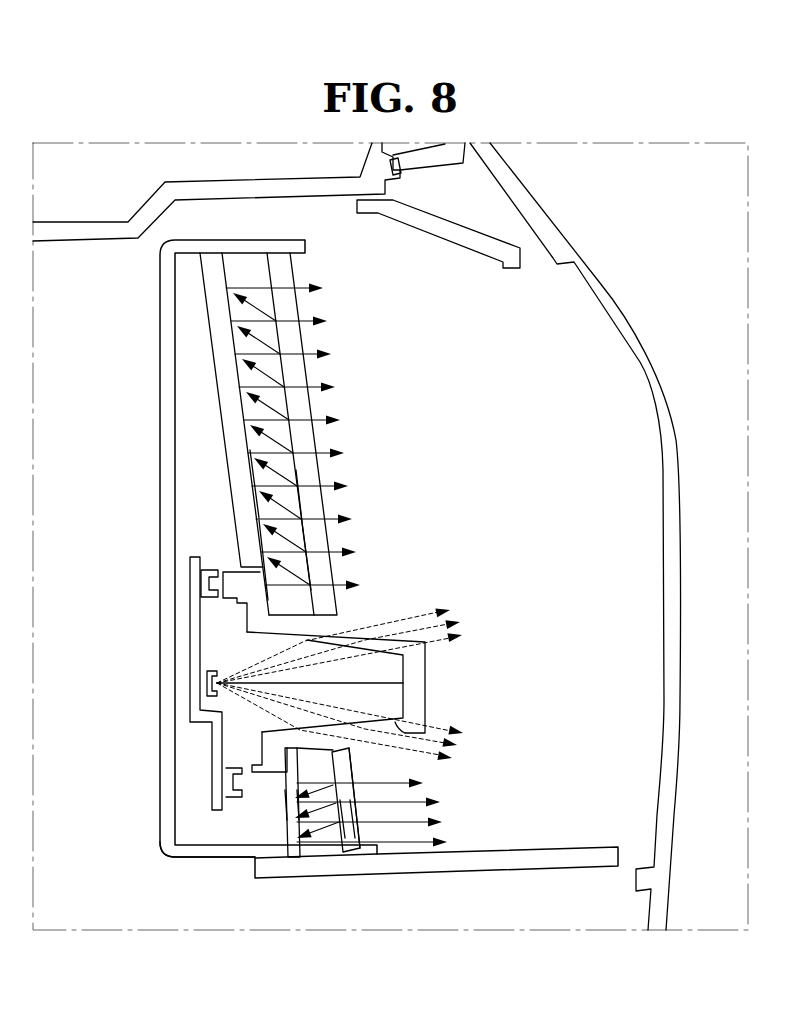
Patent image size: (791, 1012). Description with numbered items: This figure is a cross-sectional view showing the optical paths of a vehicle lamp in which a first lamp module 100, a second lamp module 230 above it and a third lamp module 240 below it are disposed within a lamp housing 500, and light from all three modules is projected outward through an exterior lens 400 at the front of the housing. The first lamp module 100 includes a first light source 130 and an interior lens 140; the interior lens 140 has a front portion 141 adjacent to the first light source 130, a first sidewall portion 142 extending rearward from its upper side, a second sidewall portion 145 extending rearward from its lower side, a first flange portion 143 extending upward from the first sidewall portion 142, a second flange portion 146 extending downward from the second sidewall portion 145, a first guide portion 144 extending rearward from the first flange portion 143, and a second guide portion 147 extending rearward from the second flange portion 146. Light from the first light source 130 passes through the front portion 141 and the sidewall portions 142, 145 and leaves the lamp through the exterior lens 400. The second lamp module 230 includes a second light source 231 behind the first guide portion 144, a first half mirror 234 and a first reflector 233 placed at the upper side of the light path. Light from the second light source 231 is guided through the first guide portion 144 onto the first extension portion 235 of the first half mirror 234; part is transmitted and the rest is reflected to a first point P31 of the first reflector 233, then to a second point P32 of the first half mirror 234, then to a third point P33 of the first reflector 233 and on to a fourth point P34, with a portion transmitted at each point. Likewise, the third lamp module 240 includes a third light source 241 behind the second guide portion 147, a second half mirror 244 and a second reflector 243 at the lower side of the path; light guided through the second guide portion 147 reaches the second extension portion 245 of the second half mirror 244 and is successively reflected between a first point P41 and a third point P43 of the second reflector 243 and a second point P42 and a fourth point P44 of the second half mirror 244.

The first lamp module 100 is at (561, 652).
The first light source 130 is at (207, 684).
The interior lens 140 is at (353, 663).
The front portion 141 is at (417, 686).
The first sidewall portion 142 is at (372, 633).
The first flange portion 143 is at (252, 603).
The first guide portion 144 is at (233, 568).
The second sidewall portion 145 is at (393, 728).
The second flange portion 146 is at (265, 748).
The second guide portion 147 is at (178, 846).
The second lamp module 230 is at (289, 434).
The second light source 231 is at (201, 583).
The first reflector 233 is at (237, 423).
The first half mirror 234 is at (303, 401).
The first extension portion 235 is at (327, 603).
The third lamp module 240 is at (383, 864).
The third light source 241 is at (226, 790).
The second reflector 243 is at (284, 845).
The second half mirror 244 is at (352, 852).
The second extension portion 245 is at (348, 763).
The exterior lens 400 is at (664, 832).
The lamp housing 500 is at (168, 349).
The first point P31 is at (260, 548).
The second point P32 is at (300, 549).
The third point P33 is at (258, 520).
The fourth point P34 is at (300, 518).
The first point P41 is at (287, 805).
The second point P42 is at (356, 838).
The third point P43 is at (298, 800).
The fourth point P44 is at (352, 835).